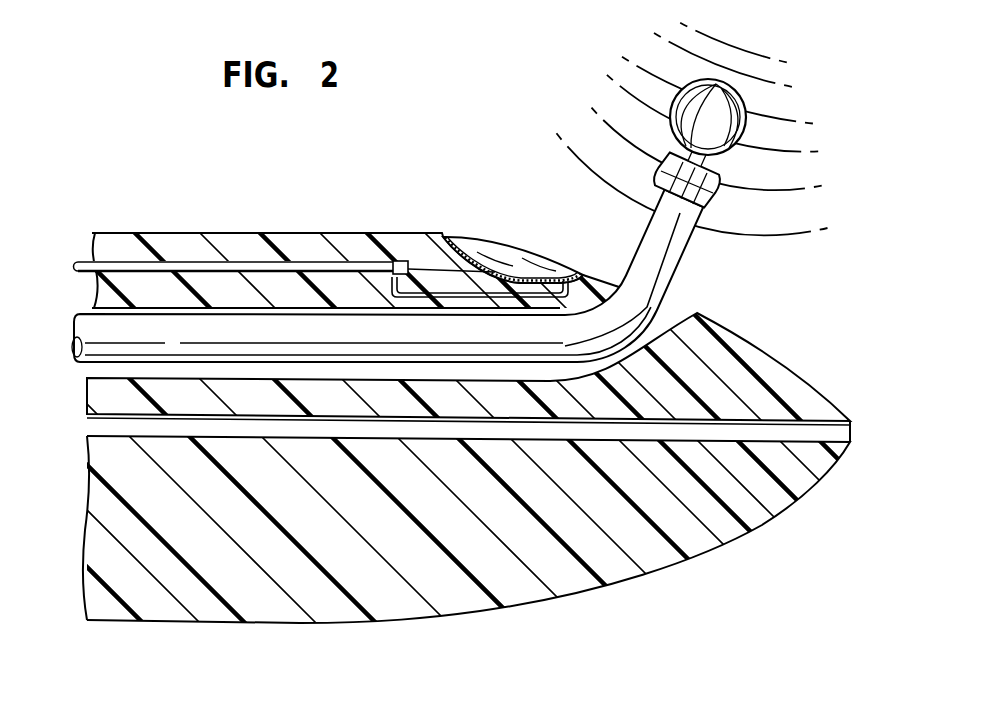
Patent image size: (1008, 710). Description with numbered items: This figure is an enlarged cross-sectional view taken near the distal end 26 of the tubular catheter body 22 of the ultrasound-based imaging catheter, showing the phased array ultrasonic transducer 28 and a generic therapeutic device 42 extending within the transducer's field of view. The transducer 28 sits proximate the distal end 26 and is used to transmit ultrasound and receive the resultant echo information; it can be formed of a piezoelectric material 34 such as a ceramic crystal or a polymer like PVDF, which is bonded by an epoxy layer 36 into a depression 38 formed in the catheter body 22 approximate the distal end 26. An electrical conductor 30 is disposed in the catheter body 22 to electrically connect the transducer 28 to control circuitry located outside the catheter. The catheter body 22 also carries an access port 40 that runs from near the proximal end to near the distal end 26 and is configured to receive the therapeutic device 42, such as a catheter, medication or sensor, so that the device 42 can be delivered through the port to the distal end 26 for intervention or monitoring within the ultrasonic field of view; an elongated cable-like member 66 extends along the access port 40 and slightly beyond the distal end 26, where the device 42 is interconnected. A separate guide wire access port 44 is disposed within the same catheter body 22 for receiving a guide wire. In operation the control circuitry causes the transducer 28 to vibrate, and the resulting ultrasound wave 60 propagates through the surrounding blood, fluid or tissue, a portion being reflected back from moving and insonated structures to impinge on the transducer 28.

The catheter body 22 is at (458, 602).
The distal end 26 is at (796, 368).
The phased array ultrasonic transducer 28 is at (501, 226).
The electrical conductor 30 is at (412, 318).
The piezoelectric material 34 is at (455, 240).
The epoxy layer 36 is at (443, 237).
The depression 38 is at (532, 260).
The access port 40 is at (85, 310).
The therapeutic device 42 is at (730, 152).
The guide wire access port 44 is at (838, 437).
The ultrasound wave 60 is at (627, 93).
The elongated cable-like member 66 is at (221, 328).